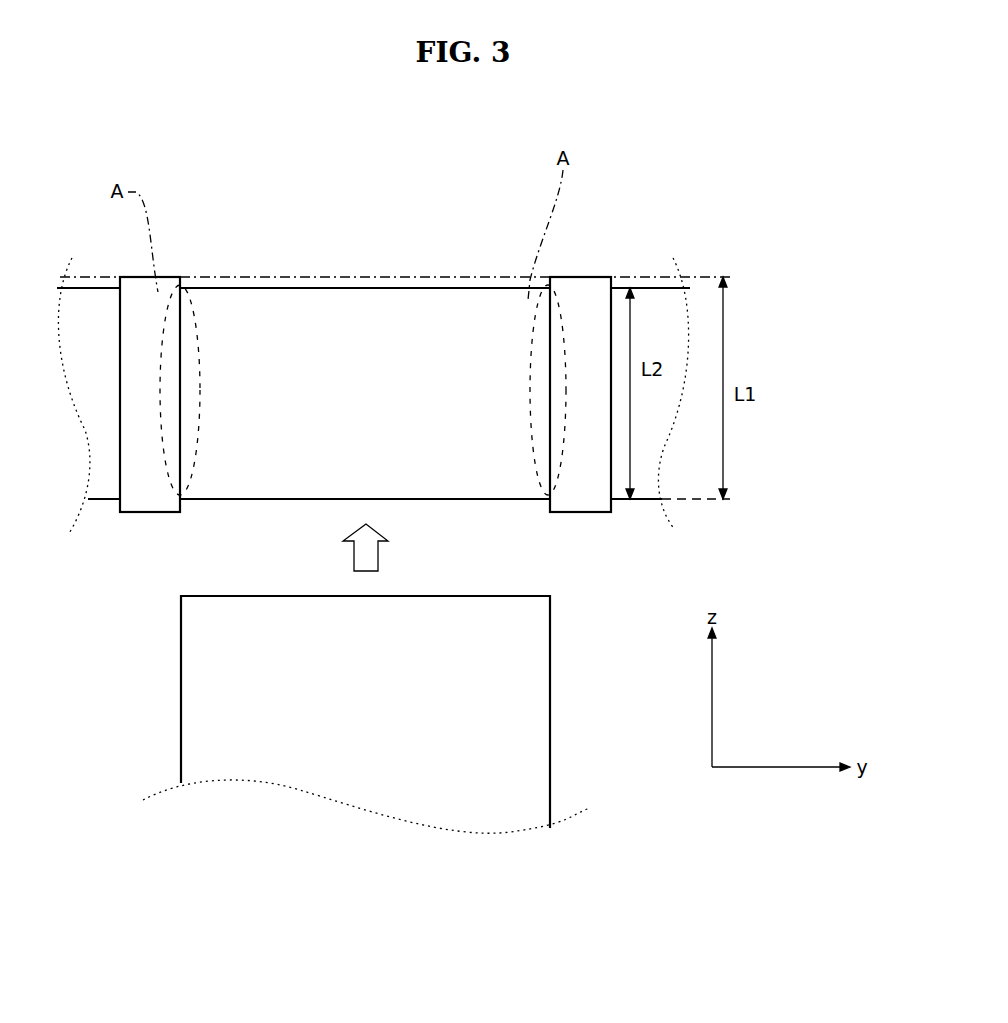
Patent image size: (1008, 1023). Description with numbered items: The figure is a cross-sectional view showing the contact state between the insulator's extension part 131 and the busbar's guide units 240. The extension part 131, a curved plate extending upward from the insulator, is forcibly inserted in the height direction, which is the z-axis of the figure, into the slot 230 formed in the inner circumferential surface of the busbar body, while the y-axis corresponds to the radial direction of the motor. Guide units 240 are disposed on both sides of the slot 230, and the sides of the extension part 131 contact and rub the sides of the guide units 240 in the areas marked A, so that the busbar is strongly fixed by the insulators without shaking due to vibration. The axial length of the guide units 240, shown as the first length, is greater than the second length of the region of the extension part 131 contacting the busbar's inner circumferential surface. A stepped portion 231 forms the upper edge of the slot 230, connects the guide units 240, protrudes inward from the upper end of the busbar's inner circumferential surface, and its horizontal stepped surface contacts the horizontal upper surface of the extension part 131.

The extension part 131 is at (181, 687).
The slot 230 is at (372, 318).
The stepped portion 231 is at (276, 286).
The guide unit 240 is at (150, 505).